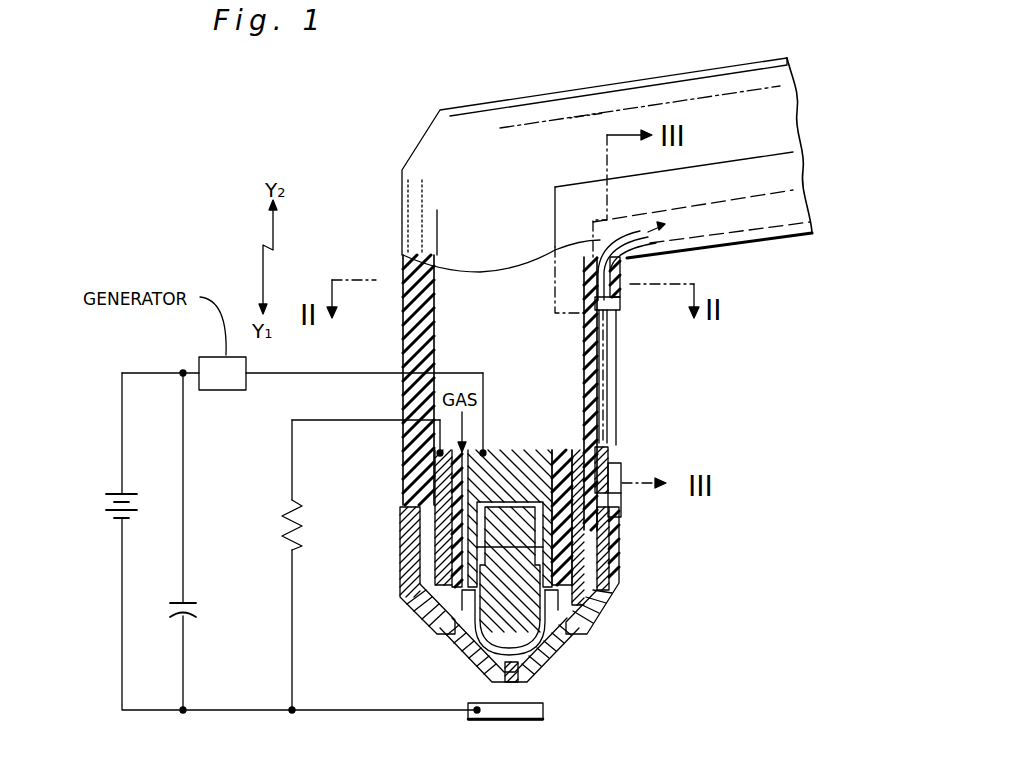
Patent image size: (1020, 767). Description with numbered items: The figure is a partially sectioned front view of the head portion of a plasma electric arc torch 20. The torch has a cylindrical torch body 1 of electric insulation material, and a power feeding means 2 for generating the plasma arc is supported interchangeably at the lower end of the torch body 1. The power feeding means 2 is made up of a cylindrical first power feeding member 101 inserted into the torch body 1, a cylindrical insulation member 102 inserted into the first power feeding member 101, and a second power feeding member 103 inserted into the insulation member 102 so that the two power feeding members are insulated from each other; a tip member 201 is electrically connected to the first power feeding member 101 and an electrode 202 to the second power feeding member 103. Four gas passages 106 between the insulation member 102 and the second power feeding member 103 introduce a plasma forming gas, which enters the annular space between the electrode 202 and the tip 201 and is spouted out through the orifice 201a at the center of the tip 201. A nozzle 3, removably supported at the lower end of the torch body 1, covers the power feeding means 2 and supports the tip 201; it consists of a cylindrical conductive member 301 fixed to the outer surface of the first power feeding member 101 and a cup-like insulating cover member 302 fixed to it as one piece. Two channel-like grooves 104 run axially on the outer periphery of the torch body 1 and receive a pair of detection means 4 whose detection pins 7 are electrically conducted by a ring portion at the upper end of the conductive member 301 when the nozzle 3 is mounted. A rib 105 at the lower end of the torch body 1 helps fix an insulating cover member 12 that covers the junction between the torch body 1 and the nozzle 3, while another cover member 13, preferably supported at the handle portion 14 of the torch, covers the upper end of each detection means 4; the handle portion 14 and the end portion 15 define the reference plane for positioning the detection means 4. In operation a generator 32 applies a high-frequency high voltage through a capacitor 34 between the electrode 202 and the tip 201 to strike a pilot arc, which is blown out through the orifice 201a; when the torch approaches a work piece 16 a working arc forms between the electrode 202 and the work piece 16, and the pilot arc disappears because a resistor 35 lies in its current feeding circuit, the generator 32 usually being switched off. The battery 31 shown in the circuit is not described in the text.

The torch body 1 is at (400, 270).
The power feeding means 2 is at (571, 607).
The nozzle 3 is at (656, 570).
The detection means 4 is at (614, 389).
The detection pin 7 is at (612, 457).
The cover member 12 is at (430, 486).
The cover member 13 is at (766, 234).
The handle portion 14 is at (712, 83).
The end portion 15 is at (615, 432).
The work piece 16 is at (540, 718).
The plasma electric arc torch 20 is at (510, 92).
The battery 31 is at (142, 505).
The generator 32 is at (226, 391).
The capacitor 34 is at (199, 611).
The resistor 35 is at (286, 524).
The first power feeding member 101 is at (433, 600).
The insulation member 102 is at (470, 540).
The second power feeding member 103 is at (450, 502).
The groove 104 is at (602, 362).
The rib 105 is at (401, 479).
The gas passage 106 is at (462, 560).
The tip member 201 is at (545, 642).
The orifice 201a is at (492, 668).
The electrode 202 is at (565, 633).
The conductive member 301 is at (601, 555).
The cover member 302 is at (619, 585).